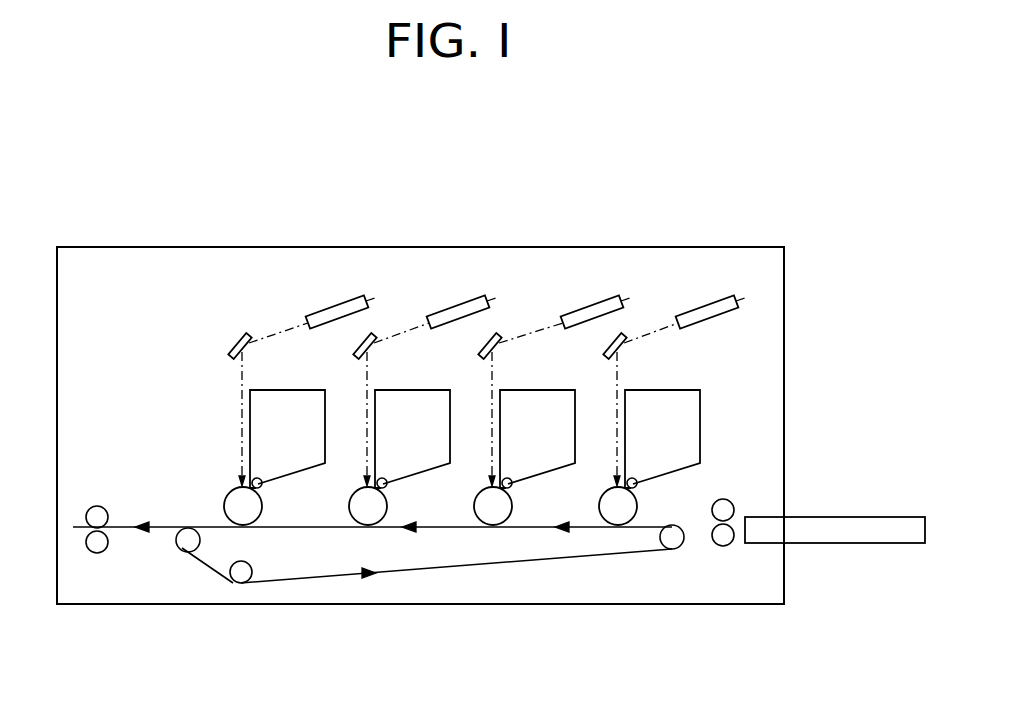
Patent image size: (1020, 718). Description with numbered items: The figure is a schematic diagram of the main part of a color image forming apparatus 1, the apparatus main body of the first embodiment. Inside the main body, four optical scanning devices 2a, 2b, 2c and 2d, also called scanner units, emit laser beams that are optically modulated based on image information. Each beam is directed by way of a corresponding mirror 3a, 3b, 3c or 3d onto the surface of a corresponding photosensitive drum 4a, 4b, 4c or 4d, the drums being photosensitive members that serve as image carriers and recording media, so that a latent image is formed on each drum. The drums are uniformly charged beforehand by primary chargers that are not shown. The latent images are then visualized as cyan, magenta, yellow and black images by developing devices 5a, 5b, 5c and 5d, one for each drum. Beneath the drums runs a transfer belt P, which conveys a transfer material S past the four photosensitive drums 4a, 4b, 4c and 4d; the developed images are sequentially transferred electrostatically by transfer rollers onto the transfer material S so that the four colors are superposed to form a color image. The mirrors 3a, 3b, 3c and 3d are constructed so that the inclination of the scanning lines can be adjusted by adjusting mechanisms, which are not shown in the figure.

The color image forming apparatus 1 is at (152, 277).
The optical scanning device 2a is at (707, 305).
The optical scanning device 2b is at (590, 306).
The optical scanning device 2c is at (458, 306).
The optical scanning device 2d is at (337, 306).
The mirror 3a is at (622, 335).
The mirror 3b is at (496, 335).
The mirror 3c is at (371, 335).
The mirror 3d is at (245, 335).
The photosensitive drum 4a is at (627, 513).
The photosensitive drum 4b is at (503, 514).
The photosensitive drum 4c is at (368, 514).
The photosensitive drum 4d is at (253, 512).
The developing device 5a is at (638, 486).
The developing device 5b is at (513, 486).
The developing device 5c is at (388, 486).
The developing device 5d is at (262, 486).
The transfer belt P is at (670, 549).
The transfer material S is at (826, 517).